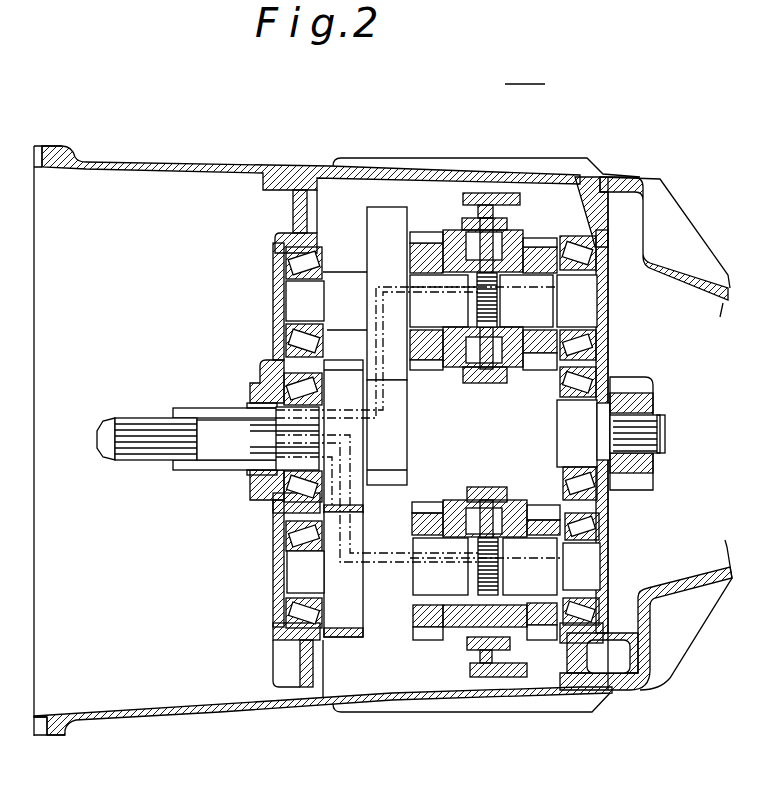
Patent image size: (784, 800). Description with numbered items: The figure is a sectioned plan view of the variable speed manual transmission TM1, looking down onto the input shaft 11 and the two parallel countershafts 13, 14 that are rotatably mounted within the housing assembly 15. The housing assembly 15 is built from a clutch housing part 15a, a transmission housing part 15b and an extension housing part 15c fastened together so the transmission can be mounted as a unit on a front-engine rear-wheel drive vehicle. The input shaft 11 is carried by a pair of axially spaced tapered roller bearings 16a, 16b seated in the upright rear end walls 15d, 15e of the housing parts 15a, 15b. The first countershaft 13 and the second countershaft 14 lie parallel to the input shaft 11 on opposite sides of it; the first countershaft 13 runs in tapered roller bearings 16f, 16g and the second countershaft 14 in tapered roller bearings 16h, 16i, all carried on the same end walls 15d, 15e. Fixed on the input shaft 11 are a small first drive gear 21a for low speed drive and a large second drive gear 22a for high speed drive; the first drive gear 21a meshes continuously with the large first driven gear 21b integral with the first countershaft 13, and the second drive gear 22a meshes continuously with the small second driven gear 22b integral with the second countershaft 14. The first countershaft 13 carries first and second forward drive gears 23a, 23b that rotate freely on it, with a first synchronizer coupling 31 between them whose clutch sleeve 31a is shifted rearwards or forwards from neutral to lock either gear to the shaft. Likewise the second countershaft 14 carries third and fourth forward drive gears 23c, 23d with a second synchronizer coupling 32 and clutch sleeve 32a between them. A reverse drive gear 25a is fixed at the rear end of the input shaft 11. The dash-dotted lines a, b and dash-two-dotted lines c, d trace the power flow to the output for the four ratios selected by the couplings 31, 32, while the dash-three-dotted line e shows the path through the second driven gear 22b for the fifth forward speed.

The input shaft 11 is at (150, 425).
The first countershaft 13 is at (588, 300).
The second countershaft 14 is at (595, 557).
The housing assembly 15 is at (395, 160).
The clutch housing part 15a is at (195, 718).
The transmission housing part 15b is at (452, 715).
The extension housing part 15c is at (665, 688).
The upright rear end wall 15d is at (280, 343).
The upright rear end wall 15e is at (609, 358).
The tapered roller bearing 16a is at (272, 507).
The tapered roller bearing 16b is at (600, 488).
The tapered roller bearing 16f is at (295, 262).
The tapered roller bearing 16g is at (593, 260).
The tapered roller bearing 16h is at (285, 622).
The tapered roller bearing 16i is at (590, 605).
The first drive gear 21a is at (390, 490).
The first driven gear 21b is at (375, 235).
The second drive gear 22a is at (343, 376).
The second driven gear 22b is at (365, 622).
The first forward drive gear 23a is at (545, 365).
The second forward drive gear 23b is at (430, 367).
The third forward drive gear 23c is at (543, 513).
The fourth forward drive gear 23d is at (425, 510).
The reverse drive gear 25a is at (642, 380).
The first synchronizer coupling 31 is at (469, 405).
The clutch sleeve 31a is at (477, 384).
The second synchronizer coupling 32 is at (505, 483).
The clutch sleeve 32a is at (487, 492).
The variable speed manual transmission TM1 is at (508, 135).
The dash and dotted line a is at (542, 255).
The dash and dotted line b is at (425, 246).
The dash and two-dotted line c is at (541, 640).
The dash and two-dotted line d is at (432, 640).
The dash and three-dotted line e is at (338, 637).